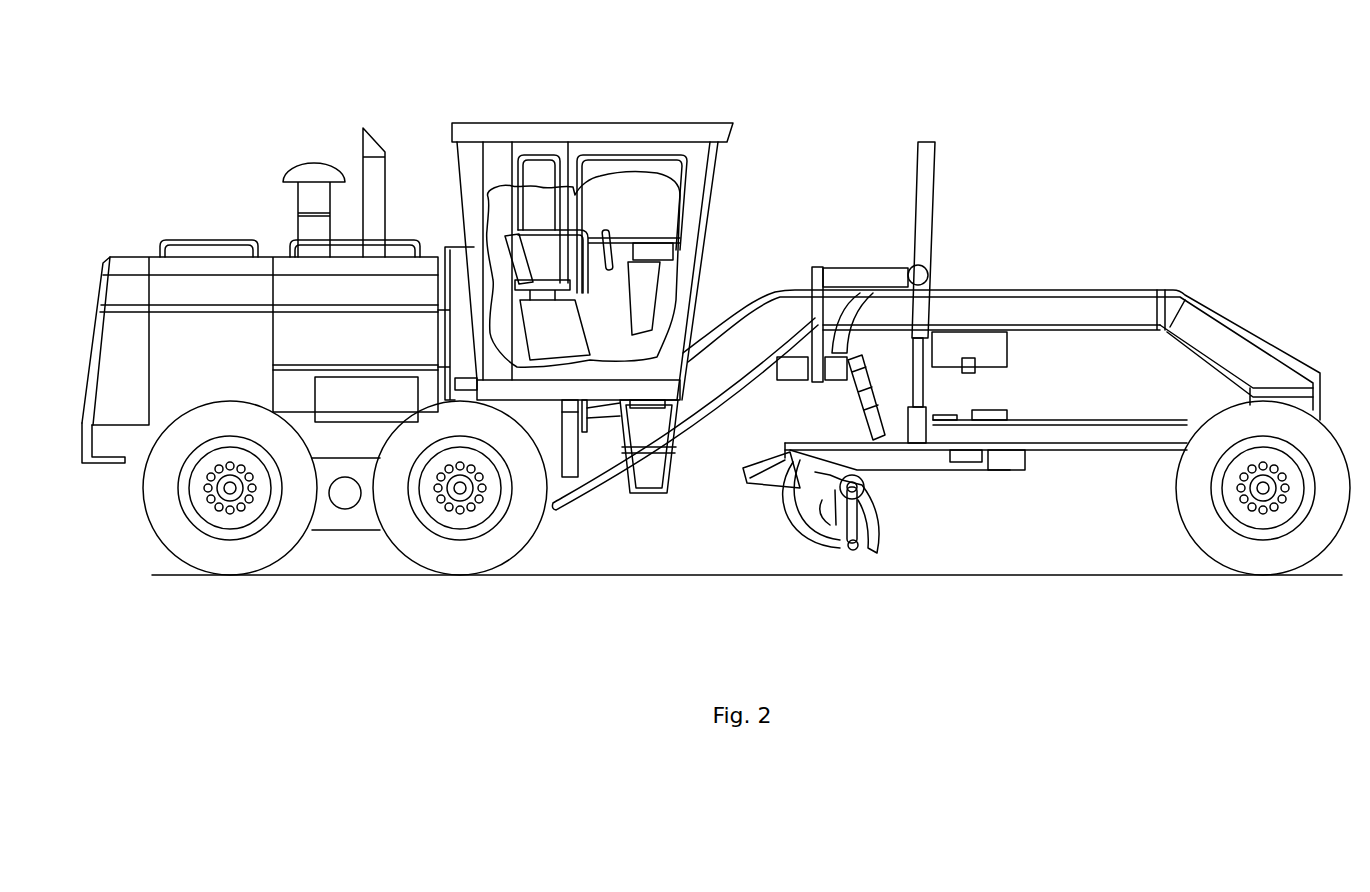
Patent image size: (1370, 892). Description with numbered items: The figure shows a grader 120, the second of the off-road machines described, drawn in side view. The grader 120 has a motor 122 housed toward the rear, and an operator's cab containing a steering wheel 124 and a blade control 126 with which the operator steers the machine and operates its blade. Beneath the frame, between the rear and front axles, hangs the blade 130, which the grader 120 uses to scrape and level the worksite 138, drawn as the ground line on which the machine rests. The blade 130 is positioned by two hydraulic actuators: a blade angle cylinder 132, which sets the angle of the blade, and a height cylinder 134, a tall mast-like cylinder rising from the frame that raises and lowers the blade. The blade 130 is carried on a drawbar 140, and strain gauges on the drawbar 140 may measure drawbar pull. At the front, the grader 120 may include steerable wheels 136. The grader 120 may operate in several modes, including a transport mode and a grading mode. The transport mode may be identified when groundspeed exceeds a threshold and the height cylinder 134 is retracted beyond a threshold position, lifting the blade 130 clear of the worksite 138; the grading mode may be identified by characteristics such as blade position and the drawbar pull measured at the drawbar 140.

The grader 120 is at (636, 39).
The motor 122 is at (280, 255).
The steering wheel 124 is at (607, 230).
The blade control 126 is at (640, 238).
The blade 130 is at (873, 507).
The blade angle cylinder 132 is at (857, 390).
The height cylinder 134 is at (927, 233).
The steerable wheels 136 is at (1180, 518).
The worksite 138 is at (565, 577).
The drawbar 140 is at (1133, 447).